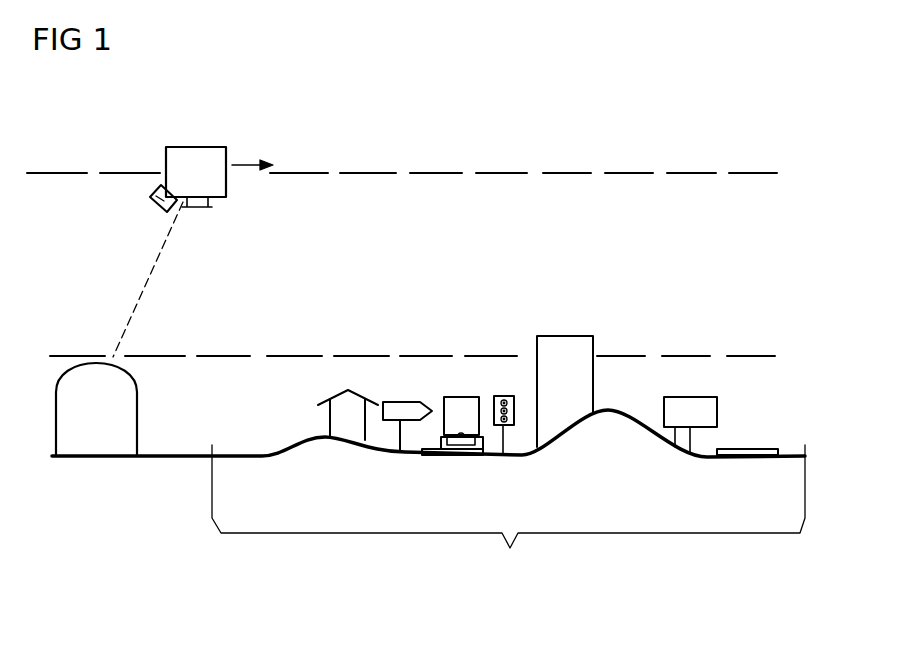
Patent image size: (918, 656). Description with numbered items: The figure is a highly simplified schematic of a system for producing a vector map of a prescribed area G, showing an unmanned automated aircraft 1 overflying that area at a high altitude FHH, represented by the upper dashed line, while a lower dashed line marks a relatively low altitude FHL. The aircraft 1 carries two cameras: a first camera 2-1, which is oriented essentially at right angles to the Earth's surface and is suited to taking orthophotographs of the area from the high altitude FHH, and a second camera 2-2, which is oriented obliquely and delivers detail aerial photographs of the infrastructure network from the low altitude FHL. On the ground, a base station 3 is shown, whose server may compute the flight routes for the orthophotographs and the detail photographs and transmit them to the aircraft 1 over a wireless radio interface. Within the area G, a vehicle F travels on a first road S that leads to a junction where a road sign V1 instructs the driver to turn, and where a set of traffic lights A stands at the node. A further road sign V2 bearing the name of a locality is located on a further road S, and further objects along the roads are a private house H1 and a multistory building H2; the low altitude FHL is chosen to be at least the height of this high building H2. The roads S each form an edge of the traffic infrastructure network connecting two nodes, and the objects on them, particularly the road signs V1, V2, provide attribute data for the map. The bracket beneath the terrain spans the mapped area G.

The unmanned automated aircraft 1 is at (199, 147).
The first camera 2-1 is at (200, 208).
The second camera 2-2 is at (152, 208).
The base station 3 is at (137, 413).
The private house H1 is at (330, 422).
The multistory building H2 is at (571, 336).
The road sign V1 is at (396, 421).
The further road sign V2 is at (672, 447).
The road S is at (430, 458).
The set of traffic lights A is at (508, 428).
The vehicle F is at (461, 397).
The prescribed area G is at (508, 514).
The high altitude FHH is at (426, 177).
The low altitude FHL is at (436, 360).